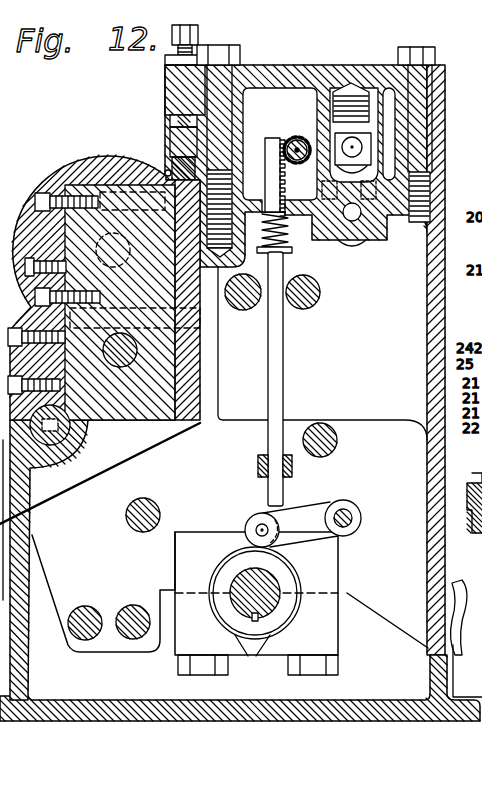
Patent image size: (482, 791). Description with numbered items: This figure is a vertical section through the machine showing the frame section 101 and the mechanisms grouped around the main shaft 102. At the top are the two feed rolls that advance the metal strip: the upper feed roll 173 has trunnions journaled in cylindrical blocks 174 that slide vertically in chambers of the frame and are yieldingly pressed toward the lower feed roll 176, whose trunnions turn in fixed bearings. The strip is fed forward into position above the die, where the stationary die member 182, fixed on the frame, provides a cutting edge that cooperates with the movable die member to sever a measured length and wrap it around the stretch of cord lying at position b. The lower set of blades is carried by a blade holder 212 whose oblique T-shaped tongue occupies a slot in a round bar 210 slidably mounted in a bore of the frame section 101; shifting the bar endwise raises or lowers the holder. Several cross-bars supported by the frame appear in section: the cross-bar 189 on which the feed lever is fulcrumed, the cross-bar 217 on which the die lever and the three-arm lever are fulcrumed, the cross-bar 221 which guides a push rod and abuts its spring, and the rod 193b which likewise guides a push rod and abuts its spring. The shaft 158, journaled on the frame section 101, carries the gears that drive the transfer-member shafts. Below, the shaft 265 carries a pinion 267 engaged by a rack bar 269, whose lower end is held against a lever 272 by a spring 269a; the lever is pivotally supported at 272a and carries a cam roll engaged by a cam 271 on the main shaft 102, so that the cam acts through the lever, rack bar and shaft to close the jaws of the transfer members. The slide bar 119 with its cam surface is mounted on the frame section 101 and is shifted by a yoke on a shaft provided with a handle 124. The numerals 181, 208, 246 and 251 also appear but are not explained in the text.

The frame section 101 is at (428, 381).
The main shaft 102 is at (272, 582).
The slide bar 119 is at (133, 605).
The handle 124 is at (466, 631).
The shaft 158 is at (244, 310).
The upper feed roll 173 is at (356, 145).
The cylindrical blocks 174 is at (355, 168).
The lower feed roll 176 is at (352, 222).
The clamping screw 181 is at (171, 133).
The stationary die member 182 is at (172, 163).
The cross-bar 189 is at (323, 428).
The rod 193b is at (317, 303).
The clamp block 208 is at (95, 162).
The round bar 210 is at (55, 437).
The blade holder 212 is at (67, 427).
The cross-bar 217 is at (158, 506).
The cross-bar 221 is at (83, 607).
The clamp body 246 is at (50, 178).
The pivot 251 is at (168, 421).
The shaft 265 is at (285, 140).
The pinion 267 is at (298, 138).
The rack bar 269 is at (284, 349).
The spring 269a is at (287, 235).
The cam 271 is at (300, 613).
The lever 272 is at (291, 524).
The pivot 272a is at (346, 510).
The cord position b is at (165, 171).